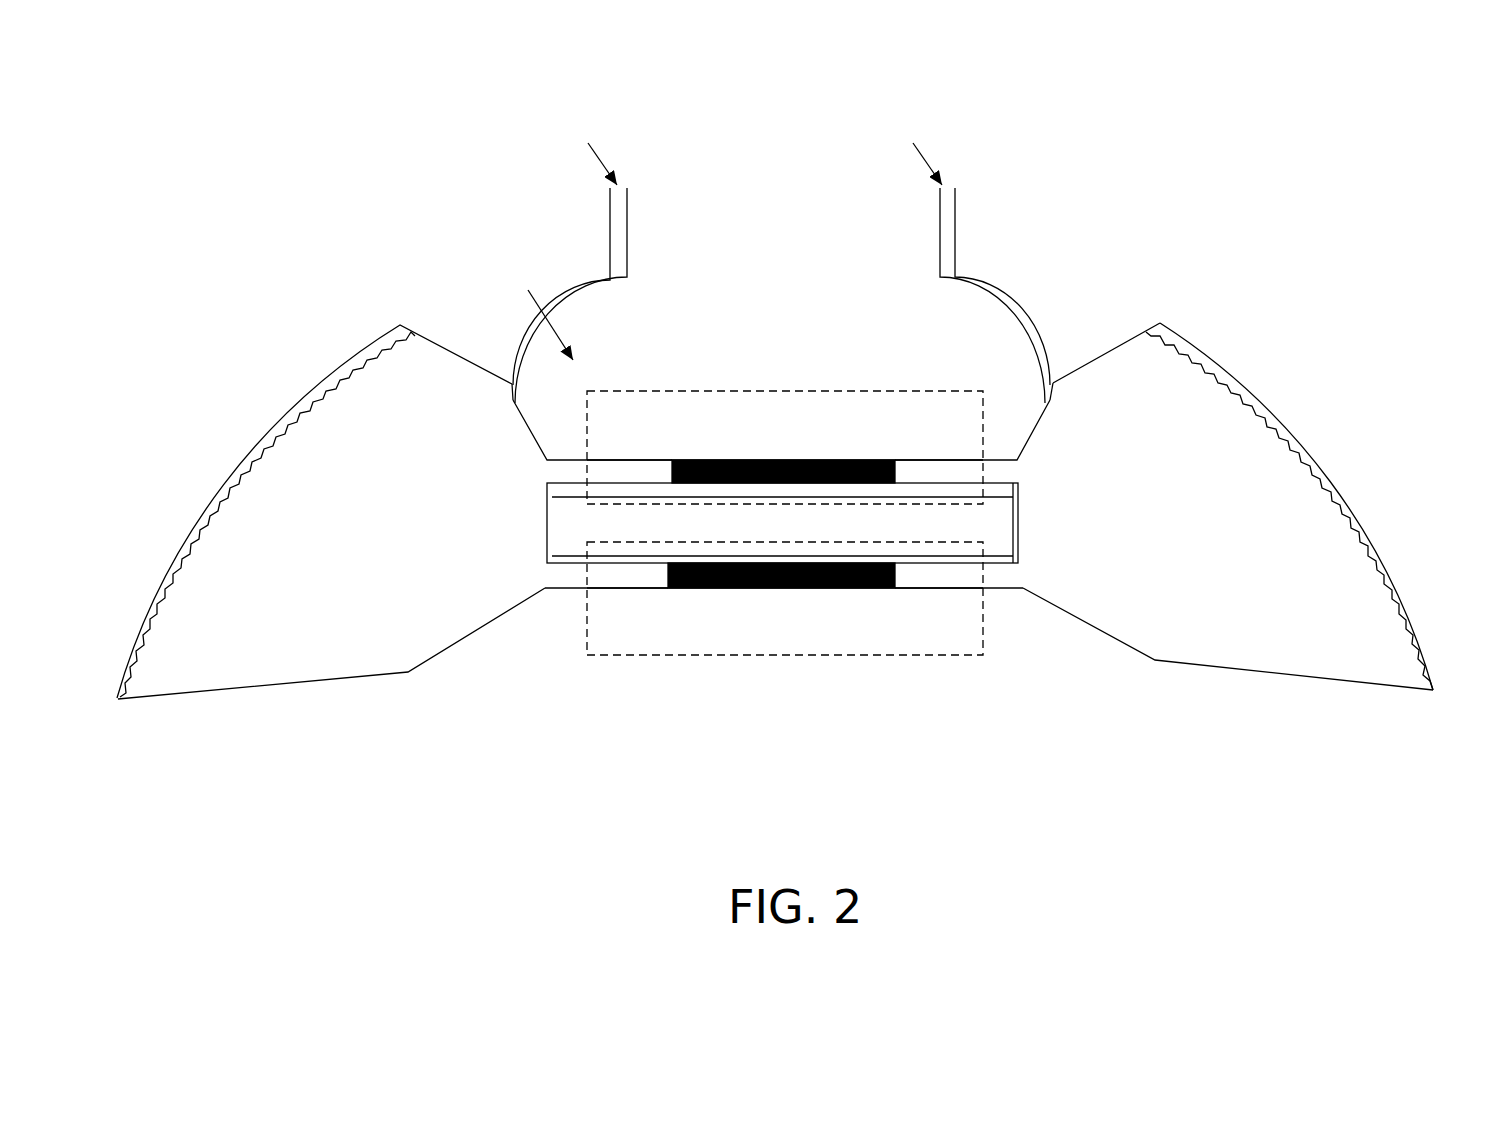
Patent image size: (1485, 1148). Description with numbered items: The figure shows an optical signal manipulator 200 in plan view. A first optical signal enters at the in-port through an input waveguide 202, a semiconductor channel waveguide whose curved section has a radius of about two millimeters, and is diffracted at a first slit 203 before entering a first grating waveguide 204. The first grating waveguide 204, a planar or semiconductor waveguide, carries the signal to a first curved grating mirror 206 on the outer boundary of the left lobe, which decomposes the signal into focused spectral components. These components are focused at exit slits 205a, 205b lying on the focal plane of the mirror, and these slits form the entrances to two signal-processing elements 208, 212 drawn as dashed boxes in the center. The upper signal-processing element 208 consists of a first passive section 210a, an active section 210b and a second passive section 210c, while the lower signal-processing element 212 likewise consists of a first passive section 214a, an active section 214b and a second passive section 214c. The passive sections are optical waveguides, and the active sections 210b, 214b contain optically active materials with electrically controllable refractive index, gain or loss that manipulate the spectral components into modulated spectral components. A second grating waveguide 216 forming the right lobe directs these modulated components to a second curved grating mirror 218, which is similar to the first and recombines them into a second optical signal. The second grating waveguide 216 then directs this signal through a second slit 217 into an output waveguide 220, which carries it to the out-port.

The optical signal manipulator 200 is at (447, 768).
The input waveguide 202 is at (623, 303).
The first slit 203 is at (515, 385).
The first grating waveguide 204 is at (331, 504).
The exit slit 205a is at (548, 482).
The exit slit 205b is at (547, 590).
The first curved grating mirror 206 is at (295, 395).
The signal-processing element 208 is at (785, 418).
The first passive section 210a is at (663, 437).
The active section 210b is at (780, 460).
The second passive section 210c is at (935, 437).
The signal-processing element 212 is at (785, 633).
The first passive section 214a is at (647, 590).
The active section 214b is at (780, 590).
The second passive section 214c is at (920, 590).
The second grating waveguide 216 is at (1228, 495).
The second slit 217 is at (1053, 387).
The second curved grating mirror 218 is at (1227, 362).
The output waveguide 220 is at (947, 317).